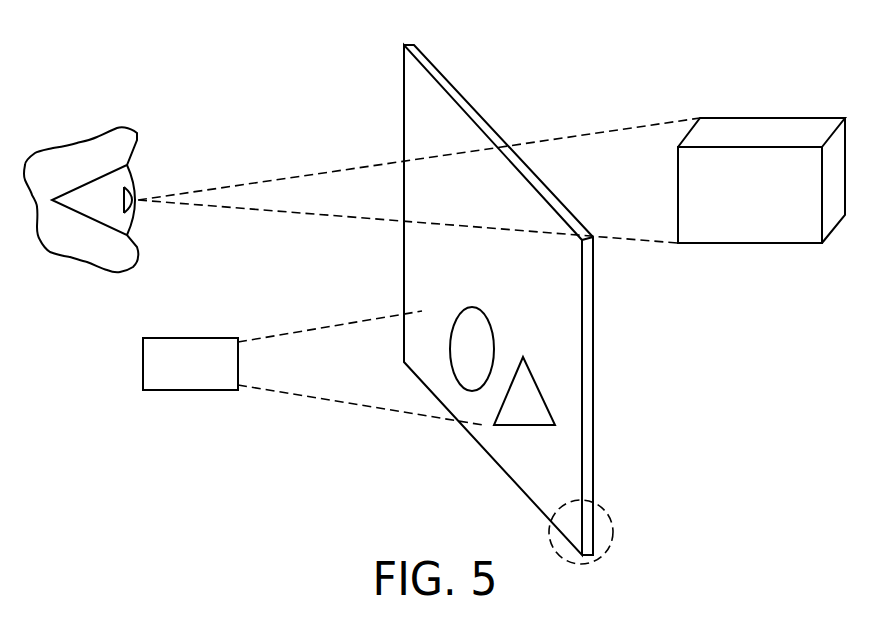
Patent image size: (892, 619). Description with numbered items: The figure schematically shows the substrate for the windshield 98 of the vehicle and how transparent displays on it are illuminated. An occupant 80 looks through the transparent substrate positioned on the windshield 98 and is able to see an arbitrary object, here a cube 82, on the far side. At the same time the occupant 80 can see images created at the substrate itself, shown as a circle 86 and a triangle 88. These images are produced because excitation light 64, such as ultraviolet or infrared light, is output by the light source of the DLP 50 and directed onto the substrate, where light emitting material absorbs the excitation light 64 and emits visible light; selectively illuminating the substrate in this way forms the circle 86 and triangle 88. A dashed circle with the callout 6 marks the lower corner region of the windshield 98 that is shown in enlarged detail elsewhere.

The windshield 98 is at (463, 98).
The occupant 80 is at (108, 145).
The cube 82 is at (736, 206).
The DLP 50 is at (176, 376).
The excitation light 64 is at (337, 402).
The circle 86 is at (465, 345).
The triangle 88 is at (523, 417).
The detail region of FIG. 6 is at (610, 510).